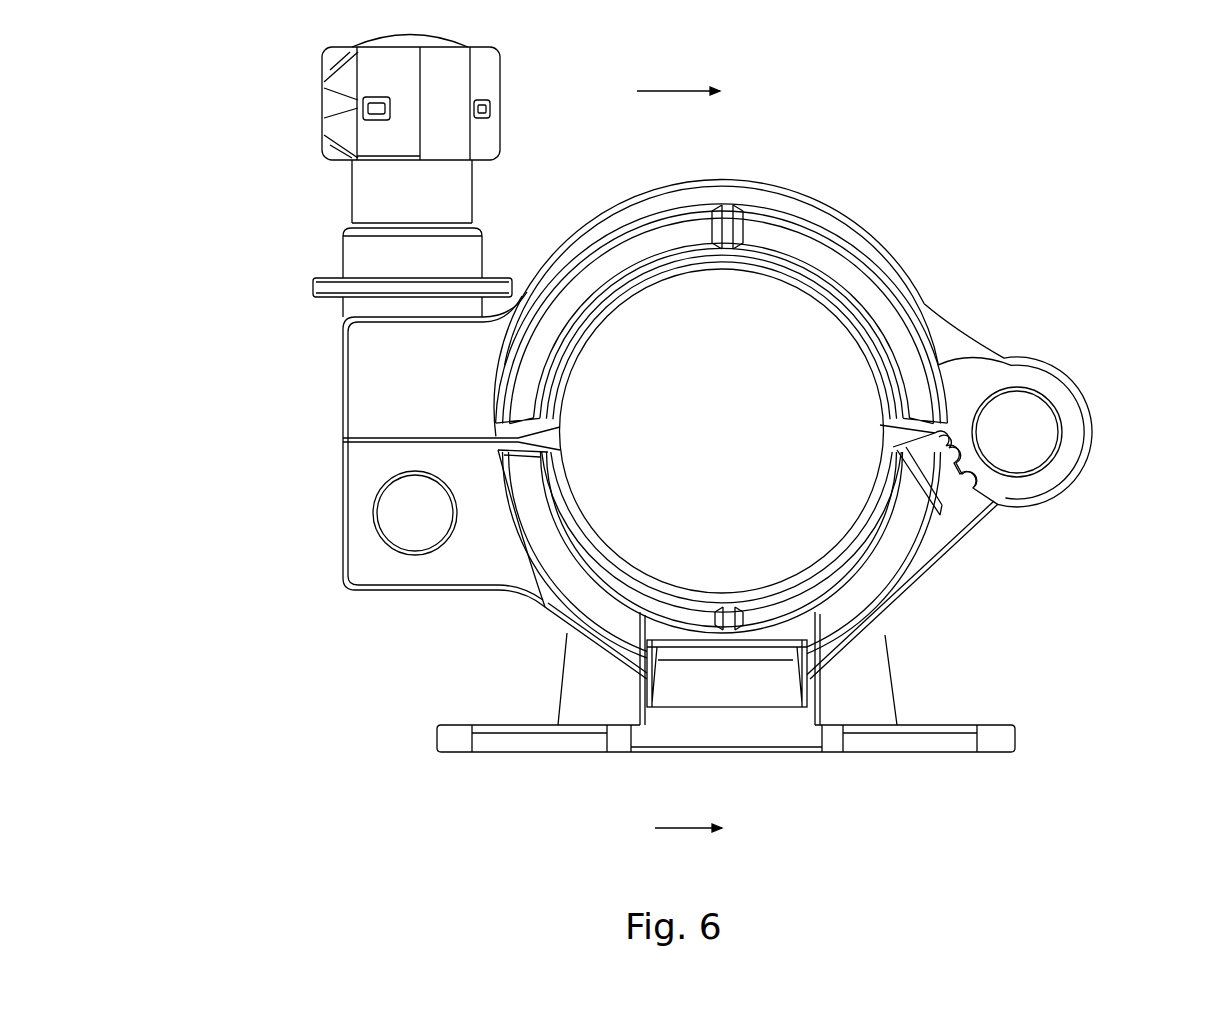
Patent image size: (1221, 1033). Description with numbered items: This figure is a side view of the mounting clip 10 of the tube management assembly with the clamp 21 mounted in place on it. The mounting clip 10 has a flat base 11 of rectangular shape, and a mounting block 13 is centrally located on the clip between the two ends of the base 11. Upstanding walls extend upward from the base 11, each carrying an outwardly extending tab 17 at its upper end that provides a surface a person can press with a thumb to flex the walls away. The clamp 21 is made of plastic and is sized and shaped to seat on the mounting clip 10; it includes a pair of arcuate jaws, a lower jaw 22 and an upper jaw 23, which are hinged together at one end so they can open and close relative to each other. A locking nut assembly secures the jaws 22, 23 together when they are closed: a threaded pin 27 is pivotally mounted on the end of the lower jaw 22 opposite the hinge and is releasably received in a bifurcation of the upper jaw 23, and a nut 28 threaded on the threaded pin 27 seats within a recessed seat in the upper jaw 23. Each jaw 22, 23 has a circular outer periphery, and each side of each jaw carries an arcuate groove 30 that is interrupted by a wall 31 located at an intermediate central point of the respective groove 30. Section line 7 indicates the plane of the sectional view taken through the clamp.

The section line 7- 7 is at (679, 465).
The mounting clip 10 is at (776, 736).
The base 11 is at (776, 793).
The mounting block 13 is at (763, 668).
The tab 17 is at (796, 749).
The clamp 21 is at (743, 407).
The lower jaw 22 is at (913, 592).
The upper jaw 23 is at (848, 212).
The threaded pin 27 is at (319, 640).
The nut 28 is at (400, 258).
The arcuate groove 30 is at (560, 555).
The wall 31 is at (730, 622).